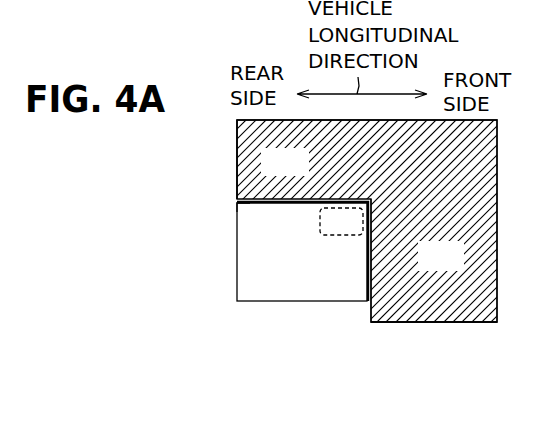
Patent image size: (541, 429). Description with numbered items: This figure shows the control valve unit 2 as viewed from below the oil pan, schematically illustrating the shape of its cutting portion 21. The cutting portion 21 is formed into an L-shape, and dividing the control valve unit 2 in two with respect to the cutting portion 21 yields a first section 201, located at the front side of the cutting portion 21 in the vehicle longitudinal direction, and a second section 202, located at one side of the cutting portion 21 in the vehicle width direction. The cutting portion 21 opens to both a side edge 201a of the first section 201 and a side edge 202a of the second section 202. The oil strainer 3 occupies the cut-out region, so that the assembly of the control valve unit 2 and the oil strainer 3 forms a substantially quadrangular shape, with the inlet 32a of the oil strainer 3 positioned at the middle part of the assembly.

The control valve unit 2 is at (381, 330).
The first section 201 is at (434, 260).
The side edge of the first section 201a is at (437, 322).
The second section 202 is at (367, 159).
The side edge of the second section 202a is at (237, 140).
The cutting portion 21 is at (237, 203).
The oil strainer 3 is at (266, 311).
The inlet 32a is at (333, 236).